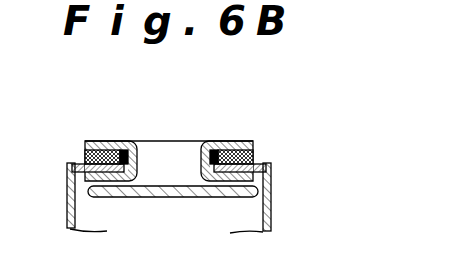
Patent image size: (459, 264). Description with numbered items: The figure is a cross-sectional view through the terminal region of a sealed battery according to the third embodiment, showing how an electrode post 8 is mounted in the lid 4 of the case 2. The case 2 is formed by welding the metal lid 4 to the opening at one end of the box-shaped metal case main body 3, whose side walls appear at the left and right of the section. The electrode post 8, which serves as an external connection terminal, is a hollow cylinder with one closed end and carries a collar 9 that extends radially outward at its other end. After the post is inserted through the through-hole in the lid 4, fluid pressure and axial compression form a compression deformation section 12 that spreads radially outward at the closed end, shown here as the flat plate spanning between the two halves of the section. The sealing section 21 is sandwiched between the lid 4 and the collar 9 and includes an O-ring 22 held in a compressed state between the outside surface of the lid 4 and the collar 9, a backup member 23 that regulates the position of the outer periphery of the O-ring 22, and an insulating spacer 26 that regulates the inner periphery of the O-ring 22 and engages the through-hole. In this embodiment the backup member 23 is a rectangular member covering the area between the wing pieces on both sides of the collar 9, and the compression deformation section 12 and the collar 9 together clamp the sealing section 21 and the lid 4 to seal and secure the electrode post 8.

The case 2 is at (273, 205).
The case main body 3 is at (67, 212).
The lid 4 is at (79, 164).
The electrode post 8 is at (170, 141).
The collar 9 is at (98, 146).
The compression deformation section 12 is at (167, 195).
The sealing section 21 is at (119, 152).
The O-ring 22 is at (243, 147).
The backup member 23 is at (253, 156).
The insulating spacer 26 is at (250, 178).